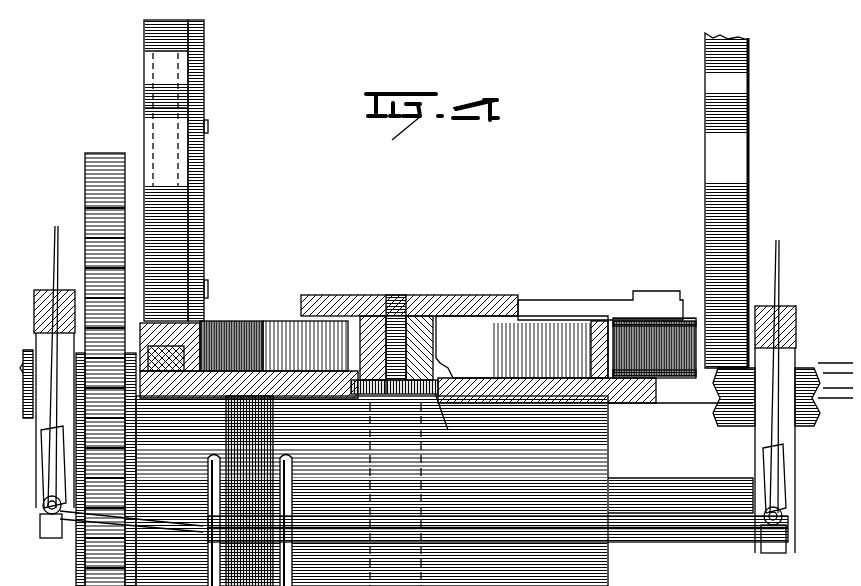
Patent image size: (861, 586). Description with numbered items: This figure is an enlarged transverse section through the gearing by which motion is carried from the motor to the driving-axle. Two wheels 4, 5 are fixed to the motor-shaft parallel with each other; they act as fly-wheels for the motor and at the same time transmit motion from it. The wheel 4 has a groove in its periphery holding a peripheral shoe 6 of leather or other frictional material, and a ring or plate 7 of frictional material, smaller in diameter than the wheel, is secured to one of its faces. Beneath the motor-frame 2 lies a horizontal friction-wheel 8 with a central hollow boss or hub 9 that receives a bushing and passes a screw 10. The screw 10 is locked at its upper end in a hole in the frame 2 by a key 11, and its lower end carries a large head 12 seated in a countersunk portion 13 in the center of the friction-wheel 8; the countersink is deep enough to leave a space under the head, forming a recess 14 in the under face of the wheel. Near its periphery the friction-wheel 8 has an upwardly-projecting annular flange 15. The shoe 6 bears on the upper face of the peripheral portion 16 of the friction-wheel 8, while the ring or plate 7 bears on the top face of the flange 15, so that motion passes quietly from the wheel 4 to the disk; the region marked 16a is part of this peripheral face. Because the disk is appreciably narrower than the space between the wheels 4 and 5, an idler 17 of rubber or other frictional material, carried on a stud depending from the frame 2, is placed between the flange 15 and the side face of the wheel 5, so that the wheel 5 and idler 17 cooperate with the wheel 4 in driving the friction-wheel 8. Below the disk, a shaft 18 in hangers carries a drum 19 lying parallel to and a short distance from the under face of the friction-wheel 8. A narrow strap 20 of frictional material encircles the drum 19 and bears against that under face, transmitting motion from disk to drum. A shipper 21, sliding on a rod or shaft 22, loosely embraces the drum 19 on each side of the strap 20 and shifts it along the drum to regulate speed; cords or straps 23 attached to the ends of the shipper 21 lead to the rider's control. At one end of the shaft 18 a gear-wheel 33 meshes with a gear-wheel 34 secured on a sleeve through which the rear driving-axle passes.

The motor-frame 2 is at (490, 302).
The wheel 4 is at (134, 86).
The wheel 5 is at (763, 124).
The peripheral shoe 6 is at (190, 320).
The ring or plate 7 is at (197, 245).
The friction-wheel 8 is at (608, 392).
The hollow boss or hub 9 is at (430, 330).
The screw 10 is at (412, 290).
The key 11 is at (384, 288).
The head 12 is at (445, 378).
The countersunk portion 13 is at (352, 372).
The recess 14 is at (451, 424).
The annular flange 15 is at (585, 320).
The peripheral portion 16 is at (249, 384).
The filling piece 16a is at (600, 350).
The idler 17 is at (664, 370).
The shaft 18 is at (680, 458).
The drum 19 is at (555, 466).
The strap 20 is at (249, 491).
The shipper 21 is at (286, 462).
The rod or shaft 22 is at (660, 534).
The cords or straps 23 is at (714, 522).
The gear-wheel 33 is at (118, 400).
The gear-wheel 34 is at (77, 173).